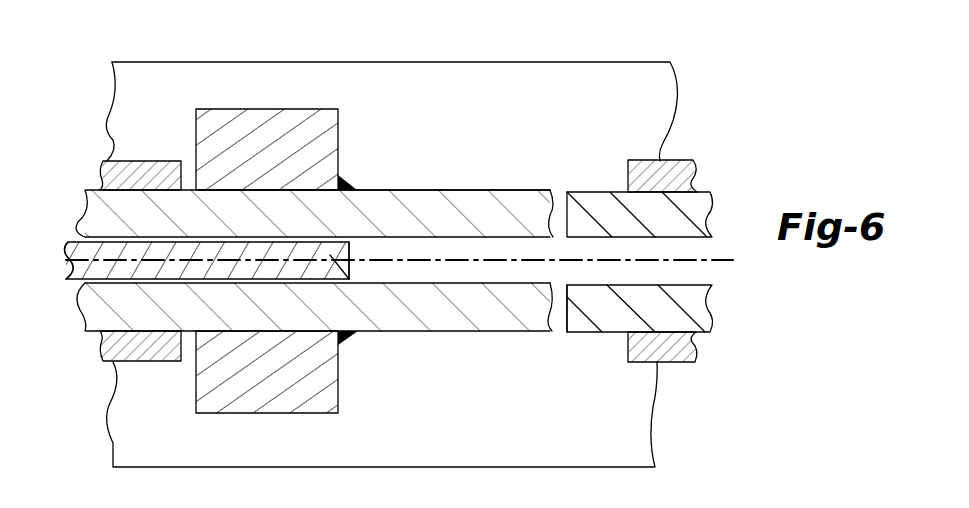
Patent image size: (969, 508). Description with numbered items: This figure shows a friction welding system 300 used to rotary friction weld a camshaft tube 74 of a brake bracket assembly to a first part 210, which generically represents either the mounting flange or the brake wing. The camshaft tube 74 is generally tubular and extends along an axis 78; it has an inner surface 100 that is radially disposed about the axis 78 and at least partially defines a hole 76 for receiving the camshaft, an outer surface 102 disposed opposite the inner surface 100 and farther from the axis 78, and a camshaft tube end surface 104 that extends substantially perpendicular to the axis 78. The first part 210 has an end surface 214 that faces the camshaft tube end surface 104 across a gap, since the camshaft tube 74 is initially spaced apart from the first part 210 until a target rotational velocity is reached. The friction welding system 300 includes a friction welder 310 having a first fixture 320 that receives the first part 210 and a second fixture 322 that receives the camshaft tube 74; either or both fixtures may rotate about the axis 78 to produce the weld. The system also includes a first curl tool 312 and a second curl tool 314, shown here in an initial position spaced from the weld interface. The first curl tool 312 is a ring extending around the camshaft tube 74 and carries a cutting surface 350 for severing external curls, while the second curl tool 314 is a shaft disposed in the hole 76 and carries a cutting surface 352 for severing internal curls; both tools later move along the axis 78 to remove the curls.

The friction welding system 300 is at (693, 127).
The friction welder 310 is at (603, 62).
The first curl tool 312 is at (293, 109).
The second curl tool 314 is at (354, 332).
The first fixture 320 is at (683, 160).
The second fixture 322 is at (141, 161).
The cutting surface 350 is at (346, 176).
The cutting surface 352 is at (330, 302).
The camshaft tube 74 is at (380, 190).
The hole 76 is at (78, 240).
The axis 78 is at (722, 260).
The inner surface 100 is at (466, 240).
The outer surface 102 is at (453, 190).
The camshaft tube end surface 104 is at (552, 192).
The first part 210 is at (598, 192).
The end surface 214 is at (566, 312).